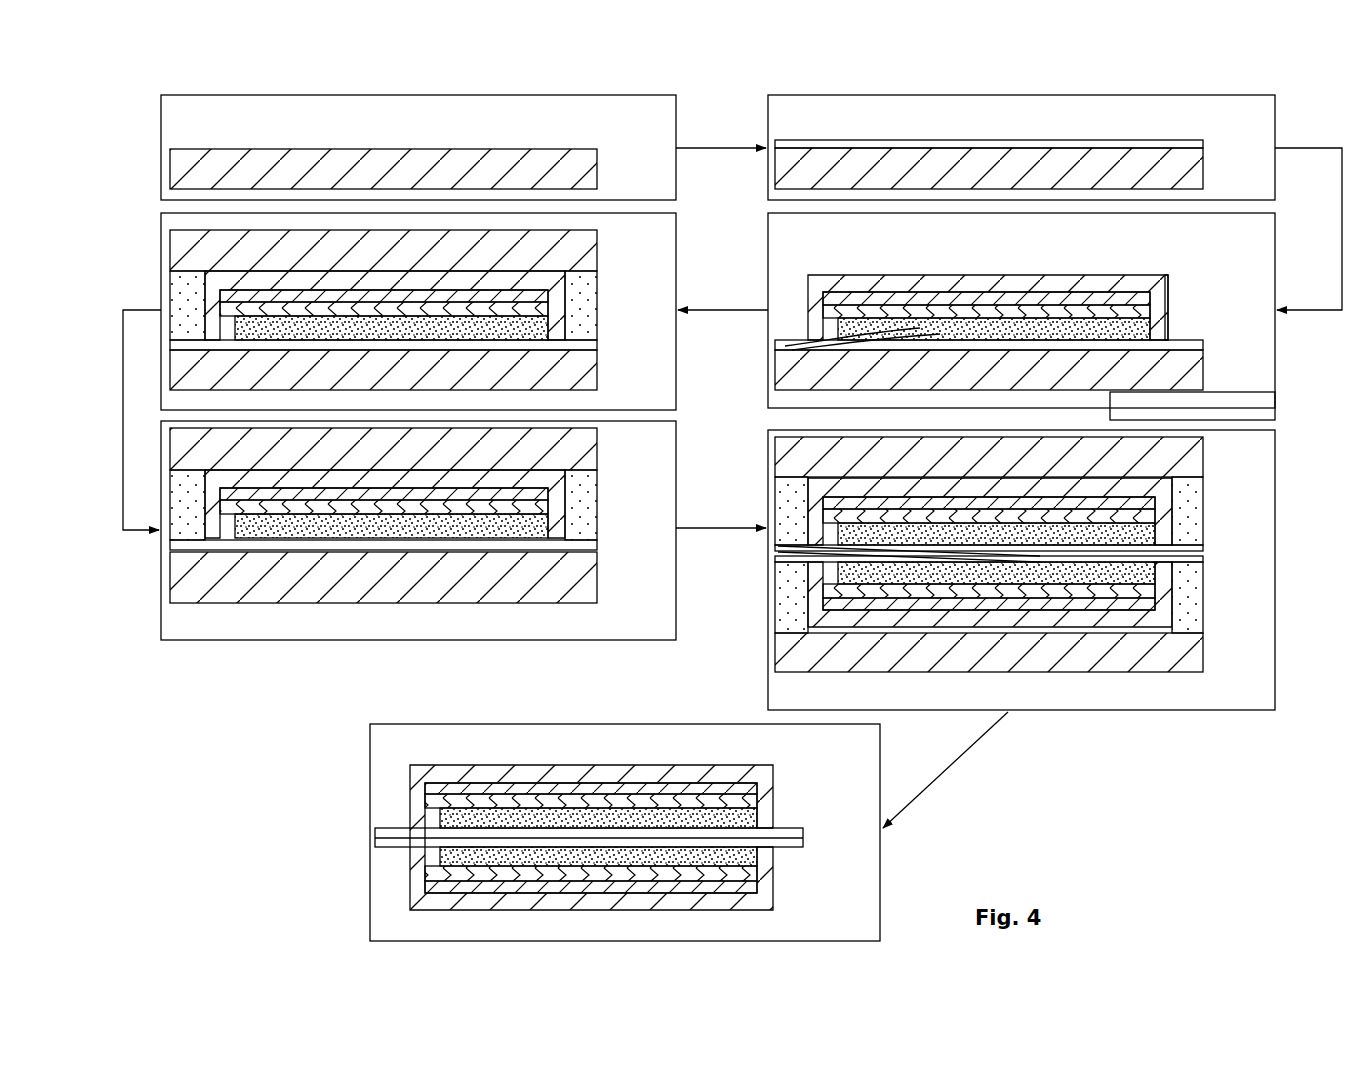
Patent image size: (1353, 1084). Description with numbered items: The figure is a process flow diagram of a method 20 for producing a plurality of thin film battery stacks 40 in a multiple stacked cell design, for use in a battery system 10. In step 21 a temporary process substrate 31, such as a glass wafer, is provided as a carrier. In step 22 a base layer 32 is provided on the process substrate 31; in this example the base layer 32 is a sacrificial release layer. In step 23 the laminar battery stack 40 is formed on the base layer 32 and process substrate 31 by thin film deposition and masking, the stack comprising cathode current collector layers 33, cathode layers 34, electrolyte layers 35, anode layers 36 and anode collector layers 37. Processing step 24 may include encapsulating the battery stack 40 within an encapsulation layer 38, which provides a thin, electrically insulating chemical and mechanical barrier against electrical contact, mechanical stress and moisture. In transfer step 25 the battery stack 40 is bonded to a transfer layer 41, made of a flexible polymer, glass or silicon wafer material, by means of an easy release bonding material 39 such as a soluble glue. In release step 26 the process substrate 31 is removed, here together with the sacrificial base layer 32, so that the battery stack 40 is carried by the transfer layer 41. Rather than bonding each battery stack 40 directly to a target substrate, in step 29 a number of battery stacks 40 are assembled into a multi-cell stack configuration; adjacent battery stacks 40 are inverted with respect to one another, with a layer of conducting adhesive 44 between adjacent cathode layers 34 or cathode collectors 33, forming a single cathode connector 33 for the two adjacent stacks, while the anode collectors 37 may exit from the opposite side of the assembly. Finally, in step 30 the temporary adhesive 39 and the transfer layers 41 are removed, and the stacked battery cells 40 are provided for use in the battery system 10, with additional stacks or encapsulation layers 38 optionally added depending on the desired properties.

The battery system 10 is at (855, 873).
The method 20 is at (101, 114).
The step of providing a process substrate 21 is at (676, 130).
The step of providing a base layer 22 is at (1275, 118).
The step of forming battery layers 23 is at (1275, 268).
The processing step 24 is at (1275, 398).
The transfer step 25 is at (676, 240).
The release step 26 is at (676, 448).
The step of assembling a multi-cell stack 29 is at (1275, 480).
The step of removing adhesive and transfer layers 30 is at (526, 724).
The process substrate 31 is at (212, 181).
The base layer 32 is at (828, 140).
The cathode current collector layer 33 is at (790, 338).
The cathode layer 34 is at (862, 335).
The electrolyte layer 35 is at (1000, 312).
The anode layer 36 is at (1082, 328).
The anode collector layer 37 is at (1182, 336).
The encapsulation layer 38 is at (912, 282).
The bonding material 39 is at (582, 322).
The battery stack 40 is at (592, 288).
The transfer layer 41 is at (210, 261).
The conducting adhesive 44 is at (1205, 553).